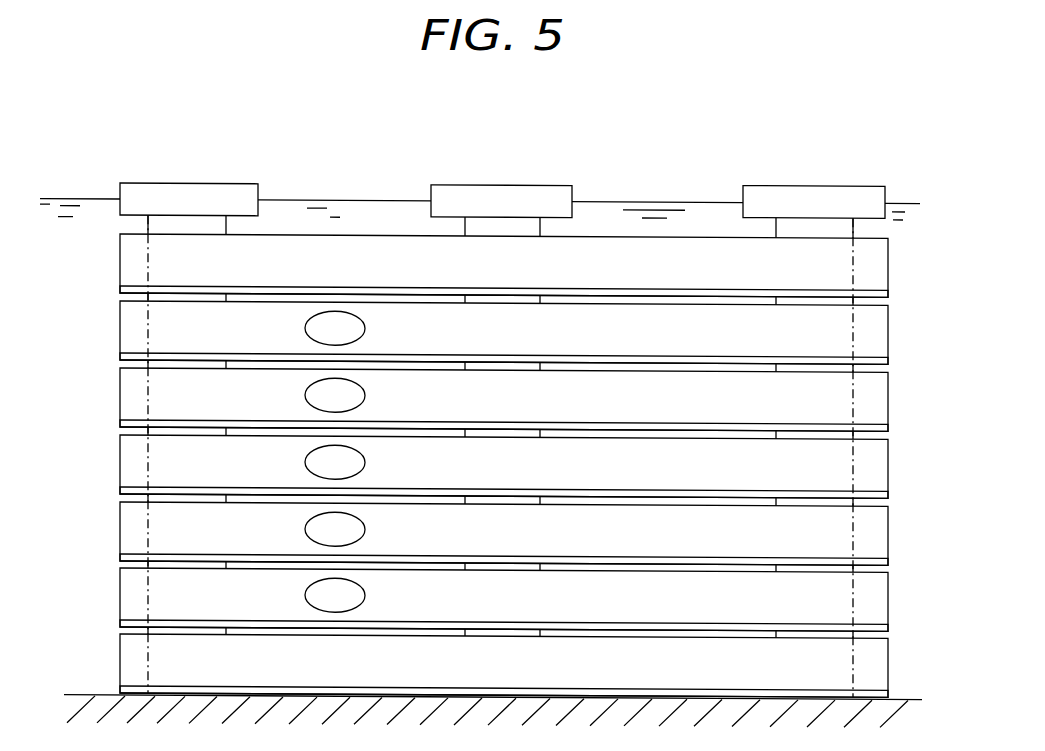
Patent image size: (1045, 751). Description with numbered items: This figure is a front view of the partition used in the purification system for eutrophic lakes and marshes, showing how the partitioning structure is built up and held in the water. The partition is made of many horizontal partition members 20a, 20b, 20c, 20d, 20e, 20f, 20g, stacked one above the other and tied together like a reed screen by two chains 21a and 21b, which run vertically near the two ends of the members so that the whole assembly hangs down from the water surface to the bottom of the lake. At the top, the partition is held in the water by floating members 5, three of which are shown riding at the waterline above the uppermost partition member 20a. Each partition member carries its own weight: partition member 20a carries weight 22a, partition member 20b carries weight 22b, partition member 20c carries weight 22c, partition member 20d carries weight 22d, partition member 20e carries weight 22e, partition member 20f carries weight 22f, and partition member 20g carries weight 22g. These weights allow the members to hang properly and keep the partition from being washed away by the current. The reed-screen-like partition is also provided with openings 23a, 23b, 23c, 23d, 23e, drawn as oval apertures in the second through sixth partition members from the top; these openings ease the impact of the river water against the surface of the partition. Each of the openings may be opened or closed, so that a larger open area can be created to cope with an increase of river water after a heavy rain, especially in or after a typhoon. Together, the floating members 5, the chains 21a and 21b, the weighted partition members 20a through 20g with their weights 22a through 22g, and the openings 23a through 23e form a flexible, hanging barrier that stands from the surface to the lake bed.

The floating member 5 is at (185, 190).
The partition member 20a is at (772, 225).
The partition member 20b is at (772, 301).
The partition member 20c is at (772, 368).
The partition member 20d is at (772, 435).
The partition member 20e is at (772, 502).
The partition member 20f is at (772, 568).
The partition member 20g is at (772, 634).
The chain 21a is at (855, 261).
The chain 21b is at (147, 327).
The weight 22a is at (568, 286).
The weight 22b is at (568, 353).
The weight 22c is at (568, 420).
The weight 22d is at (568, 487).
The weight 22e is at (568, 554).
The weight 22f is at (568, 620).
The weight 22g is at (568, 686).
The opening 23a is at (365, 327).
The opening 23b is at (365, 394).
The opening 23c is at (365, 461).
The opening 23d is at (365, 528).
The opening 23e is at (365, 594).